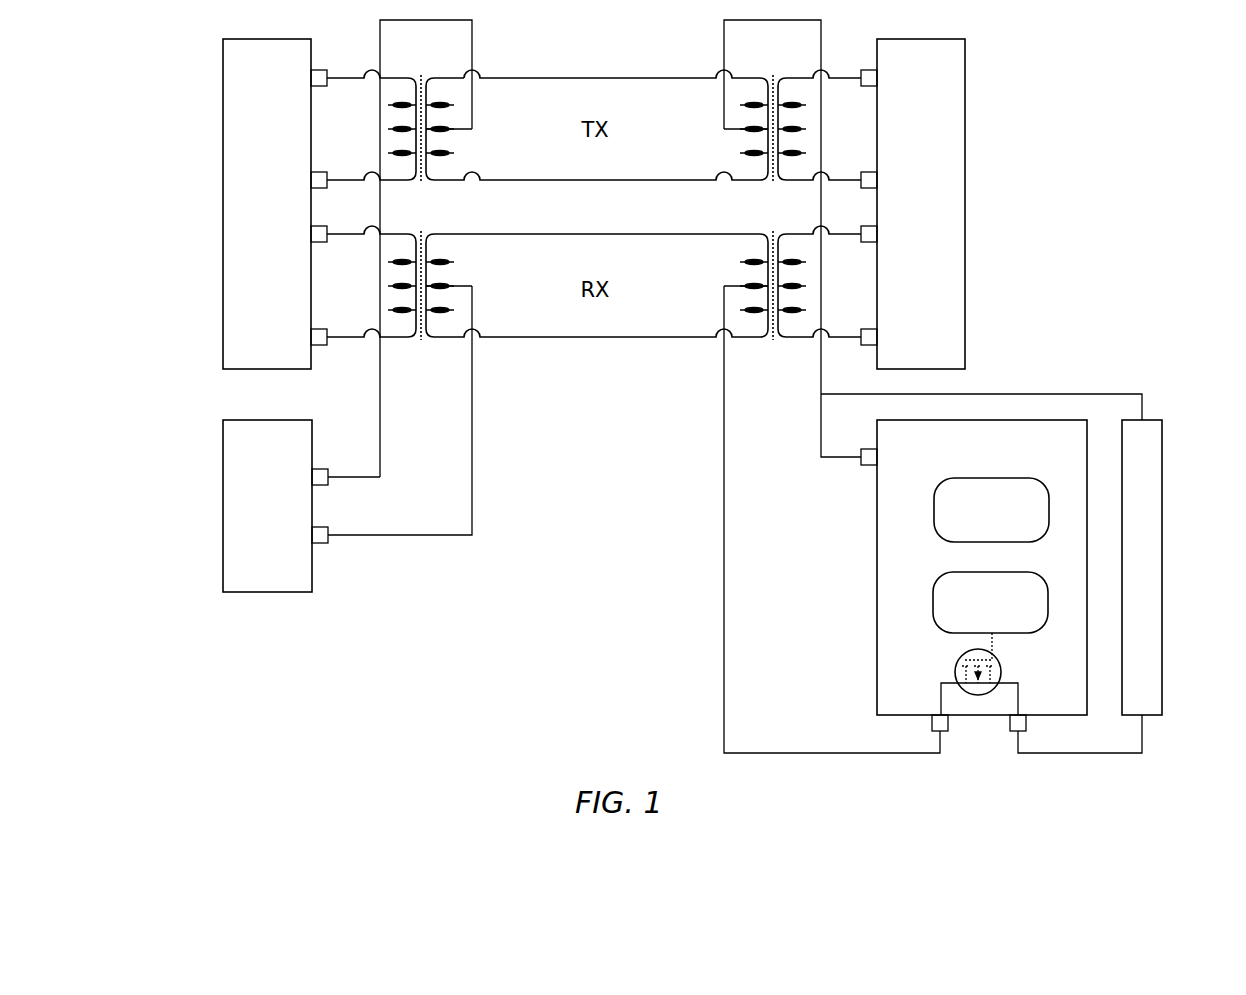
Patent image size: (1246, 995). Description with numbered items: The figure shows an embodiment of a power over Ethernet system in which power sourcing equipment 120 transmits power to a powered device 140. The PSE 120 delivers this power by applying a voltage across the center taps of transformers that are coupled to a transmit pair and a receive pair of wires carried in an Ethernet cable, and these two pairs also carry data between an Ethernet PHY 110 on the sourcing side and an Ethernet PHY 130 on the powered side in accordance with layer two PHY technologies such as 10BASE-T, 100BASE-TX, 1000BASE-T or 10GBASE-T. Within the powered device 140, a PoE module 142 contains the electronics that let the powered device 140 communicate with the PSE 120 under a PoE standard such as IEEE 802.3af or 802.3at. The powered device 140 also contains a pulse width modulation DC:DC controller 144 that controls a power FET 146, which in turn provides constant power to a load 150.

The Ethernet PHY 110 is at (223, 203).
The power sourcing equipment 120 is at (223, 506).
The Ethernet PHY 130 is at (965, 203).
The powered device 140 is at (877, 558).
The PoE module 142 is at (968, 478).
The pulse width modulation DC:DC controller 144 is at (952, 572).
The power FET 146 is at (956, 675).
The load 150 is at (1162, 558).